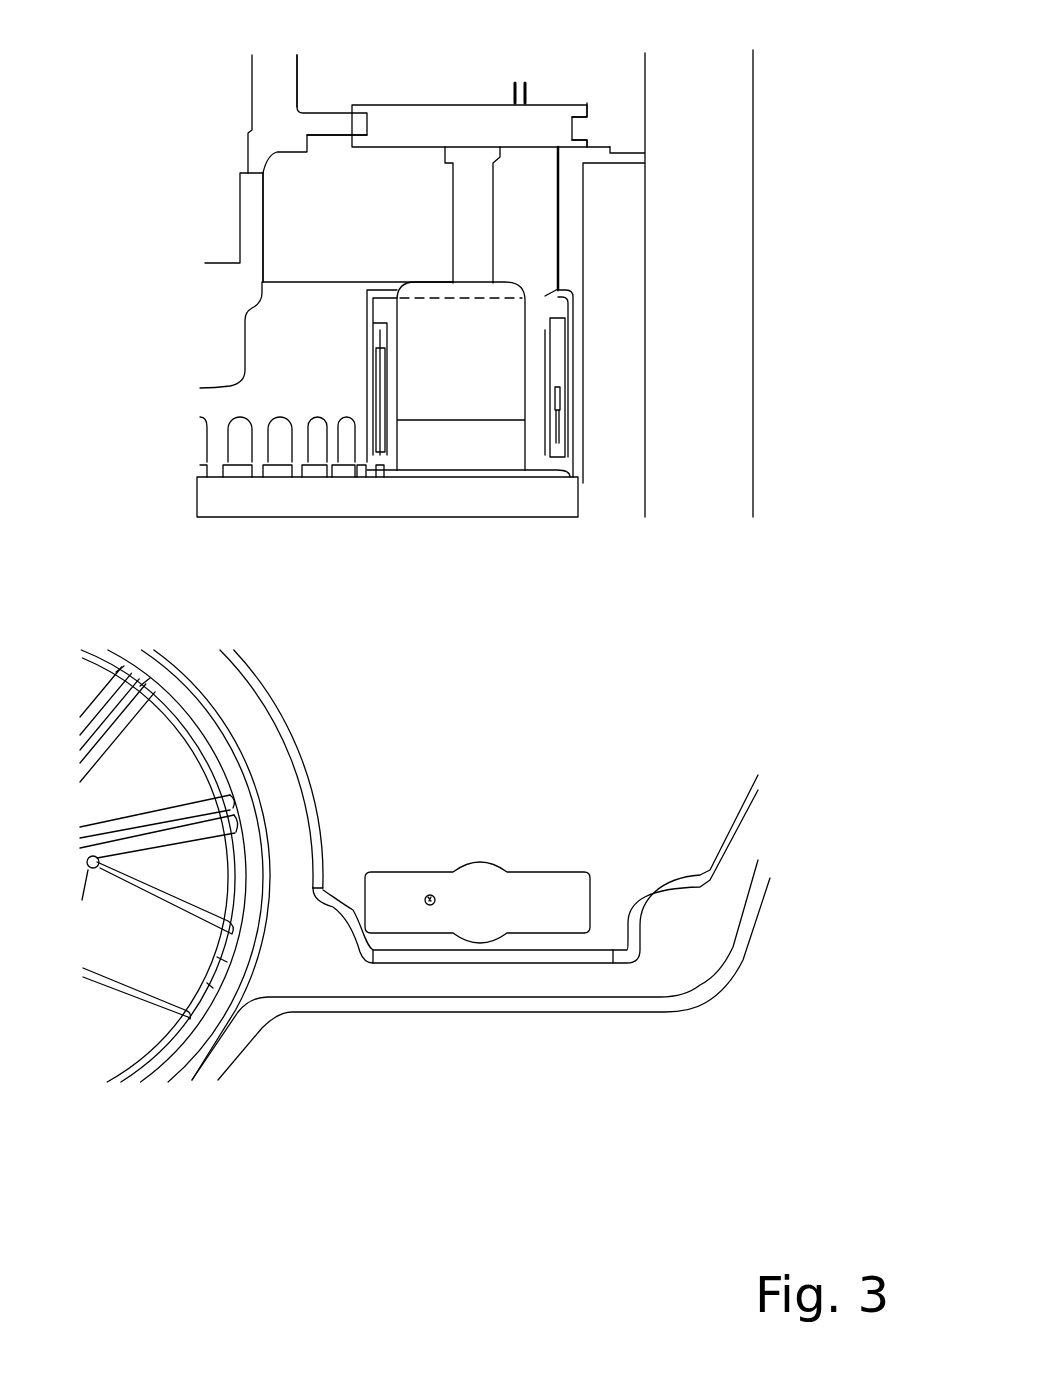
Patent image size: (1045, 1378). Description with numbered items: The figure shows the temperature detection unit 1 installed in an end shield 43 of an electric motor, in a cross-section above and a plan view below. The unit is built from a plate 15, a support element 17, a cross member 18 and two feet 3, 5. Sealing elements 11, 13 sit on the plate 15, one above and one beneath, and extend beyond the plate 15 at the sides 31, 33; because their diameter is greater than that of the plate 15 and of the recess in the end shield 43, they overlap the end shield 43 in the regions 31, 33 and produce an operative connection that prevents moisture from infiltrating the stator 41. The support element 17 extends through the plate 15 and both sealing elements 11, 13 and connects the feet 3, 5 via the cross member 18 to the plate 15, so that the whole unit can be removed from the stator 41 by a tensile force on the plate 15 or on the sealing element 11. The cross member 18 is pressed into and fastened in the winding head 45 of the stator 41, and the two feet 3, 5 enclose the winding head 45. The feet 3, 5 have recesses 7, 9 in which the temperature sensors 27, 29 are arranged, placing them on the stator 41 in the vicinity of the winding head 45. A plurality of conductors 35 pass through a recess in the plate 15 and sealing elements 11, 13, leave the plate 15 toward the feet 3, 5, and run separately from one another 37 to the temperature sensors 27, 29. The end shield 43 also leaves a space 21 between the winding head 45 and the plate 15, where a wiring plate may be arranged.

The temperature detection unit 1 is at (444, 54).
The foot 3 is at (377, 395).
The foot 5 is at (568, 333).
The recess 7 is at (385, 422).
The recess 9 is at (566, 348).
The sealing element 11 is at (578, 110).
The sealing element 13 is at (578, 140).
The plate 15 is at (444, 140).
The support element 17 is at (492, 243).
The cross member 18 is at (558, 290).
The space 21 is at (348, 245).
The temperature sensor 27 is at (393, 334).
The temperature sensor 29 is at (548, 421).
The side region 31 is at (359, 101).
The side region 33 is at (358, 151).
The conductors 35 is at (536, 90).
The separate conductor run 37 is at (558, 227).
The stator 41 is at (266, 512).
The end shield 43 is at (280, 125).
The winding head 45 is at (496, 377).